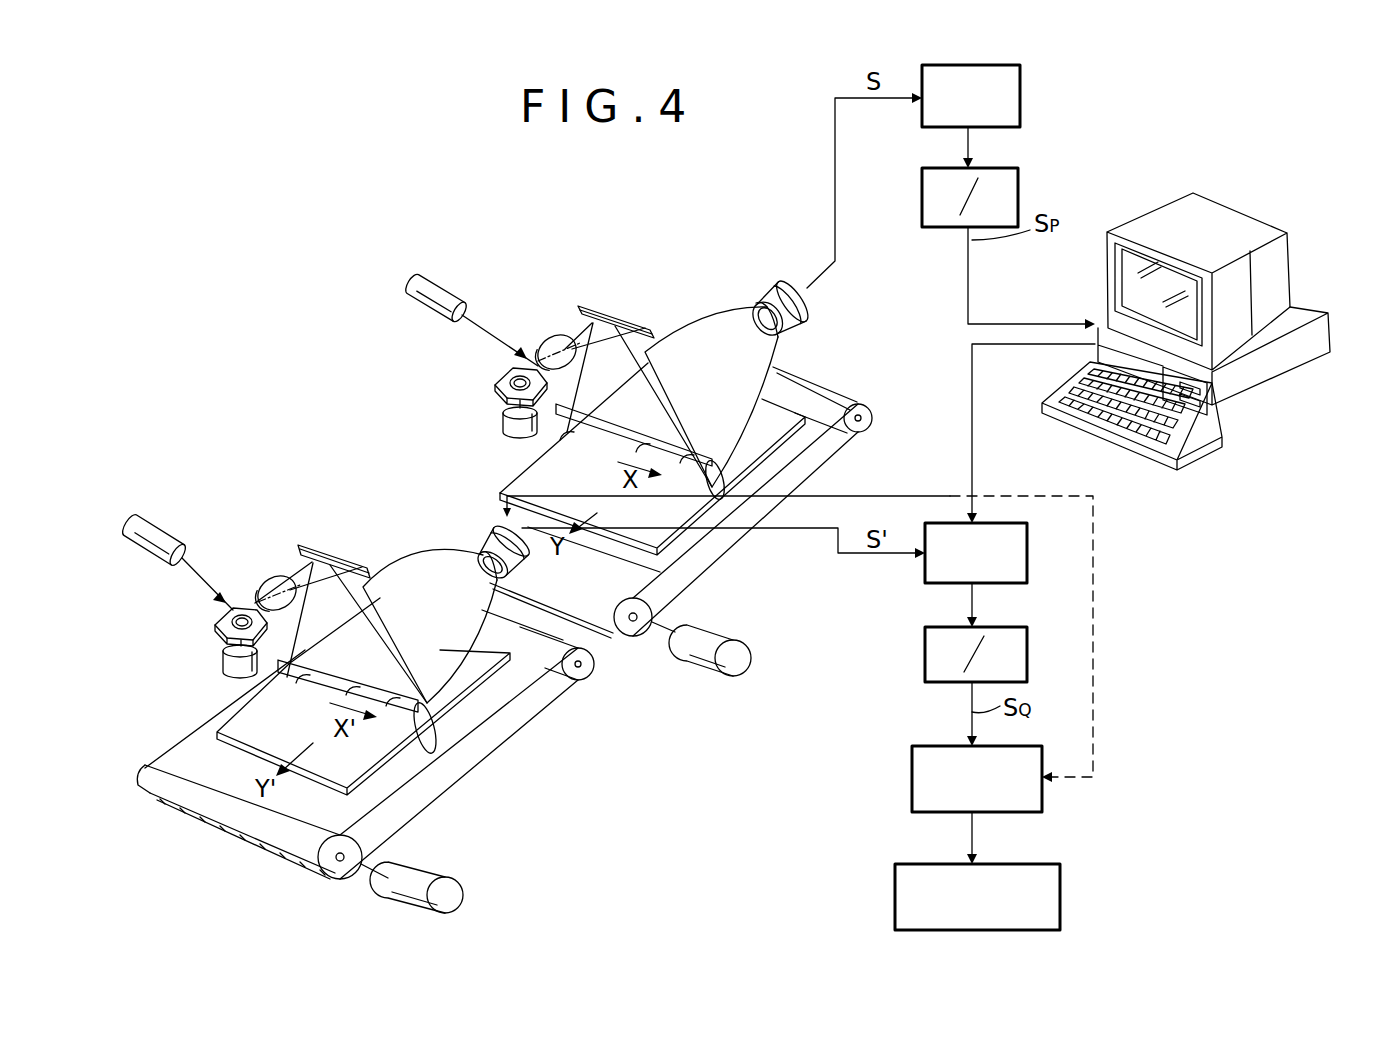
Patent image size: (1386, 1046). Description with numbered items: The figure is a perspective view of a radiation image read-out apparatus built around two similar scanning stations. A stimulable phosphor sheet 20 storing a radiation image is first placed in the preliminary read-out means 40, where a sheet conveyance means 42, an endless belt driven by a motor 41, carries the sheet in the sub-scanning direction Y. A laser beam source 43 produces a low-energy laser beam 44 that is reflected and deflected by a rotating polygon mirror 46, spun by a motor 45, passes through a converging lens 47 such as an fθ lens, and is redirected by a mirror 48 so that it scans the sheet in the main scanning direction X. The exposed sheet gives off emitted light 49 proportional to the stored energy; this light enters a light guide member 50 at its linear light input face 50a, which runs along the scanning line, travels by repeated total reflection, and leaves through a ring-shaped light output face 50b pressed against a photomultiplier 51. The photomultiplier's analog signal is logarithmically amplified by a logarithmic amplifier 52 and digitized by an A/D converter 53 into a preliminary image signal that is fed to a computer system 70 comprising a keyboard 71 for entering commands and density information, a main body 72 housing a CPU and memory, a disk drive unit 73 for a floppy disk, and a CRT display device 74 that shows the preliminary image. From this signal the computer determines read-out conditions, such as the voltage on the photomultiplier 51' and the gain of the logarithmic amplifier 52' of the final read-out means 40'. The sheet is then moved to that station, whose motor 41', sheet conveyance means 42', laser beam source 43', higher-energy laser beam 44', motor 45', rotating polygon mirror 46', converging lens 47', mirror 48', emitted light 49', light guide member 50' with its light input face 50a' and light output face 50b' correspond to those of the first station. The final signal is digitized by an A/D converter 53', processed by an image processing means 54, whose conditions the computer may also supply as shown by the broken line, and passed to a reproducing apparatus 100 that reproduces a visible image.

The stimulable phosphor sheet 20 is at (790, 462).
The preliminary read-out means 40 is at (575, 254).
The motor 41 is at (717, 638).
The sheet conveyance means 42 is at (677, 503).
The laser beam source 43 is at (448, 291).
The laser beam 44 is at (500, 331).
The motor 45 is at (492, 417).
The rotating polygon mirror 46 is at (490, 382).
The converging lens 47 is at (555, 330).
The mirror 48 is at (627, 308).
The emitted light 49 is at (606, 408).
The light guide member 50 is at (711, 386).
The linear light input face 50a is at (773, 494).
The ring-shaped light output face 50b is at (805, 339).
The photomultiplier 51 is at (778, 289).
The logarithmic amplifier 52 is at (1002, 96).
The A/D converter 53 is at (1002, 196).
The final read-out means 40' is at (259, 484).
The motor 41' is at (432, 875).
The sheet conveyance means 42' is at (365, 753).
The laser beam source 43' is at (177, 536).
The laser beam 44' is at (217, 570).
The motor 45' is at (207, 659).
The rotating polygon mirror 46' is at (205, 615).
The converging lens 47' is at (275, 563).
The mirror 48' is at (334, 546).
The emitted light 49' is at (340, 649).
The light guide member 50' is at (430, 604).
The linear light input face 50a' is at (486, 739).
The ring-shaped light output face 50b' is at (543, 576).
The photomultiplier 51' is at (481, 523).
The logarithmic amplifier 52' is at (1005, 553).
The A/D converter 53' is at (1006, 650).
The image processing means 54 is at (1042, 748).
The reproducing apparatus 100 is at (1060, 870).
The computer system 70 is at (1276, 208).
The keyboard 71 is at (1205, 455).
The main body 72 is at (1307, 312).
The disk drive unit 73 is at (1200, 397).
The CRT display device 74 is at (1133, 266).